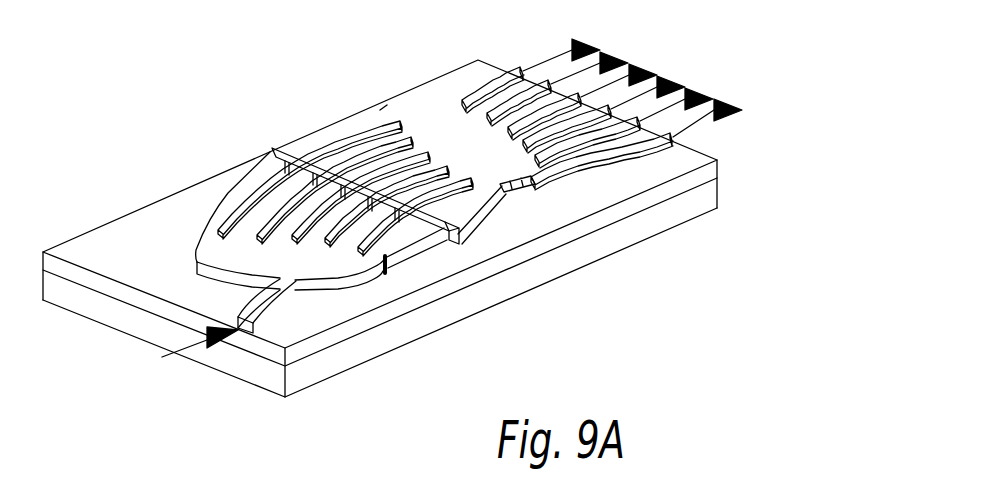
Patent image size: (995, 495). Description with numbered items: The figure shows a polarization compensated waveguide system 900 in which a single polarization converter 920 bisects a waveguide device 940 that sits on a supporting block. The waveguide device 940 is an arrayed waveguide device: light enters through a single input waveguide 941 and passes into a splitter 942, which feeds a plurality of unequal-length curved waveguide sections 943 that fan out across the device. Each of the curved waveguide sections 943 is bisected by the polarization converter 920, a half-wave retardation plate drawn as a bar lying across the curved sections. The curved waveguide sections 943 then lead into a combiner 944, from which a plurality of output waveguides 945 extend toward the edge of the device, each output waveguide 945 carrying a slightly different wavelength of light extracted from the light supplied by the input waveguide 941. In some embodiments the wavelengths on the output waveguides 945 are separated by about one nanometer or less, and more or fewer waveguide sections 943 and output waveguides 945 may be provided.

The polarization compensated waveguide system 900 is at (138, 63).
The waveguide device 940 is at (188, 203).
The input waveguide 941 is at (263, 325).
The splitter 942 is at (343, 289).
The unequal-length curved waveguide sections 943 is at (390, 135).
The polarization converter 920 is at (276, 148).
The combiner 944 is at (426, 112).
The output waveguides 945 is at (568, 90).